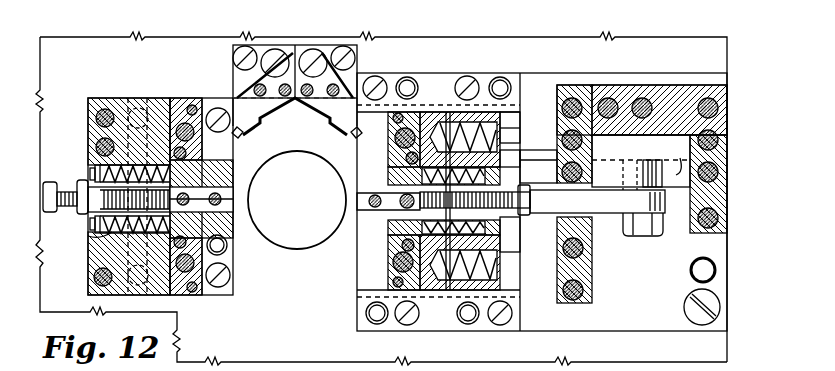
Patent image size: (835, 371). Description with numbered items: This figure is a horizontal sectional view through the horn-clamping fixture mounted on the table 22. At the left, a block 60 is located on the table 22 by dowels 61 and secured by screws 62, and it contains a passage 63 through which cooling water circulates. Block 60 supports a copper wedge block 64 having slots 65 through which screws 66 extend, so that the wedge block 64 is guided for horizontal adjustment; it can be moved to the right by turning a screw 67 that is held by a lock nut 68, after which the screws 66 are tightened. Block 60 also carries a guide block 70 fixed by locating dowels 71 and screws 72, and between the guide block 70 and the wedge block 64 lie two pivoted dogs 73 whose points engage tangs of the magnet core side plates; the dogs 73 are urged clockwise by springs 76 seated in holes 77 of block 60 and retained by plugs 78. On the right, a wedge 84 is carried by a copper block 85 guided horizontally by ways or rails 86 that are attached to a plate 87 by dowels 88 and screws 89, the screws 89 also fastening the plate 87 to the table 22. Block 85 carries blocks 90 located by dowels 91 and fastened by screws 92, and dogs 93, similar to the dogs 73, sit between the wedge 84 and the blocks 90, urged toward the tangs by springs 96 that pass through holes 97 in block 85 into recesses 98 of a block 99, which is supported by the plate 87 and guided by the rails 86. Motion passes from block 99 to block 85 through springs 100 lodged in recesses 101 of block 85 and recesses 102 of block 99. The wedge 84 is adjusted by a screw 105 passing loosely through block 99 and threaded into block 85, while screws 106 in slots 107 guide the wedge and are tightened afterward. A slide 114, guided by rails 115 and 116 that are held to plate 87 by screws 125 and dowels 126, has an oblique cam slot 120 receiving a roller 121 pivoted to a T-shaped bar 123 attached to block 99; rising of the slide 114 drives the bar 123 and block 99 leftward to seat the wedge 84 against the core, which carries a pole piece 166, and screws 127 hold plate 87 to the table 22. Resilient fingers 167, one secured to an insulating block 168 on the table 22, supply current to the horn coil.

The table 22 is at (40, 231).
The block 60 is at (94, 98).
The dowels 61 is at (96, 118).
The screws 62 is at (96, 147).
The passage 63 is at (137, 98).
The copper wedge block 64 is at (233, 200).
The slots 65 is at (232, 168).
The screws 66 is at (230, 186).
The screw 67 is at (50, 182).
The lock nut 68 is at (80, 182).
The guide block 70 is at (191, 105).
The locating dowels 71 is at (184, 147).
The screws 72 is at (183, 124).
The dogs 73 is at (200, 182).
The springs 76 is at (147, 168).
The holes 77 is at (96, 236).
The plugs 78 is at (90, 228).
The wedge 84 is at (357, 233).
The copper block 85 is at (357, 290).
The ways or rails 86 is at (435, 76).
The plate 87 is at (638, 73).
The dowels 88 is at (407, 77).
The screws 89 is at (376, 76).
The blocks 90 is at (406, 159).
The dowels 91 is at (393, 119).
The screws 92 is at (395, 138).
The dogs 93 is at (388, 176).
The springs 96 is at (512, 170).
The holes 97 is at (520, 158).
The recesses 98 is at (520, 190).
The block 99 is at (520, 234).
The springs 100 is at (512, 118).
The recesses 101 is at (441, 121).
The recesses 102 is at (515, 135).
The screw 105 is at (532, 199).
The screws 106 is at (400, 204).
The slots 107 is at (369, 200).
The slide 114 is at (688, 166).
The rail 115 is at (678, 96).
The rail 116 is at (580, 85).
The oblique cam slot 120 is at (670, 205).
The roller 121 is at (655, 162).
The bar 123 is at (618, 209).
The screws 125 is at (612, 96).
The dowels 126 is at (572, 97).
The screws 127 is at (720, 303).
The pole piece 166 is at (592, 271).
The resilient fingers 167 is at (332, 130).
The insulating block 168 is at (305, 45).